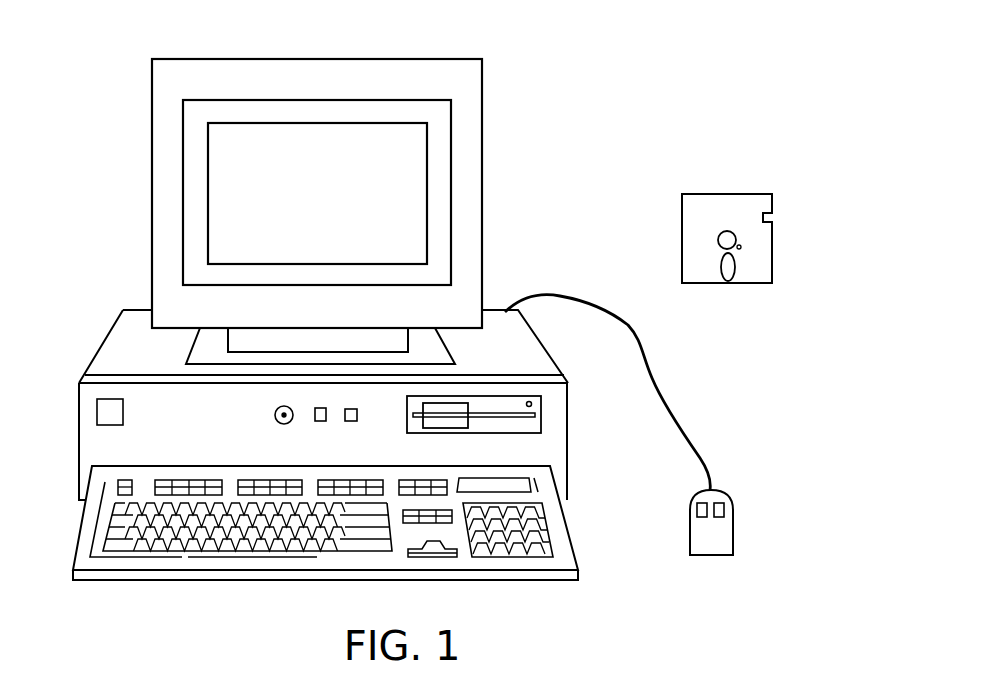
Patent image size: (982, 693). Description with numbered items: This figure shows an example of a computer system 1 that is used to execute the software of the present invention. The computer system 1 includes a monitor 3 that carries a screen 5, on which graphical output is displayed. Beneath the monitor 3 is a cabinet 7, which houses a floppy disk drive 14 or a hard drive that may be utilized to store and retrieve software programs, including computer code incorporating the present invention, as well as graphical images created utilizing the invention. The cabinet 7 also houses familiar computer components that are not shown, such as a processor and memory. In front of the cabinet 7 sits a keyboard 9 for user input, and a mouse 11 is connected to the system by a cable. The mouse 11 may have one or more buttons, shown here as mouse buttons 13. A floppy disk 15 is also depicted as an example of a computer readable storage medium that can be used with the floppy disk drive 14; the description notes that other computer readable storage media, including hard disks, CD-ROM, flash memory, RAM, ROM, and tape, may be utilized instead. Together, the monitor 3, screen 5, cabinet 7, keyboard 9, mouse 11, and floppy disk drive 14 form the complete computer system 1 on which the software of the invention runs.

The computer system 1 is at (648, 84).
The monitor 3 is at (483, 184).
The screen 5 is at (415, 155).
The cabinet 7 is at (518, 361).
The keyboard 9 is at (278, 581).
The mouse 11 is at (718, 537).
The mouse buttons 13 is at (718, 507).
The floppy disk drive 14 is at (541, 416).
The floppy disk 15 is at (732, 193).